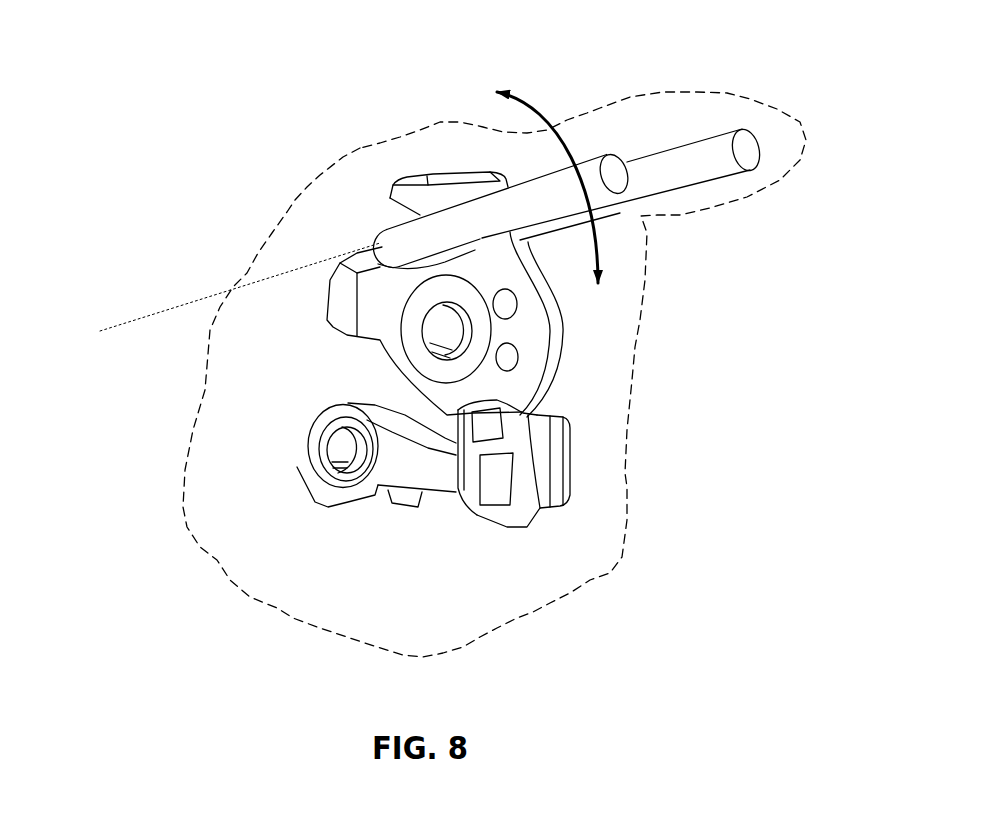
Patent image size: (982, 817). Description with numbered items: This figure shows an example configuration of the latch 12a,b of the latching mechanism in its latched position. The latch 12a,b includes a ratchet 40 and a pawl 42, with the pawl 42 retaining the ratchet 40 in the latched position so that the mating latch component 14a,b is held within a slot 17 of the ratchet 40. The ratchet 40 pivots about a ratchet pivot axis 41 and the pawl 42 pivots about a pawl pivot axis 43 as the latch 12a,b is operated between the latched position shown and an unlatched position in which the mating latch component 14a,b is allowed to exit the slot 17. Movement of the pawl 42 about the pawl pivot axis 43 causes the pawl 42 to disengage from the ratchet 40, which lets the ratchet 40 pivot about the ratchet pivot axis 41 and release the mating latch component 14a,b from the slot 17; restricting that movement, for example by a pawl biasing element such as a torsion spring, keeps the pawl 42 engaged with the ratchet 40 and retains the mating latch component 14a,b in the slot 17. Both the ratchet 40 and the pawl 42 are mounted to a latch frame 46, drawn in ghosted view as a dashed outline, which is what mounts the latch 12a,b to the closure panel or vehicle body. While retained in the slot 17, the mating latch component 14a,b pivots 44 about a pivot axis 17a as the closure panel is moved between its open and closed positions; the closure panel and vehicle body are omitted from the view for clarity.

The latch 12a,b is at (441, 362).
The mating latch component 14a,b is at (693, 145).
The slot 17 is at (377, 213).
The pivot axis 17a is at (222, 292).
The ratchet 40 is at (443, 173).
The ratchet pivot axis 41 is at (470, 338).
The pawl 42 is at (414, 494).
The pawl pivot axis 43 is at (331, 457).
The pivoting of the mating latch component 44 is at (550, 115).
The latch frame 46 is at (247, 433).